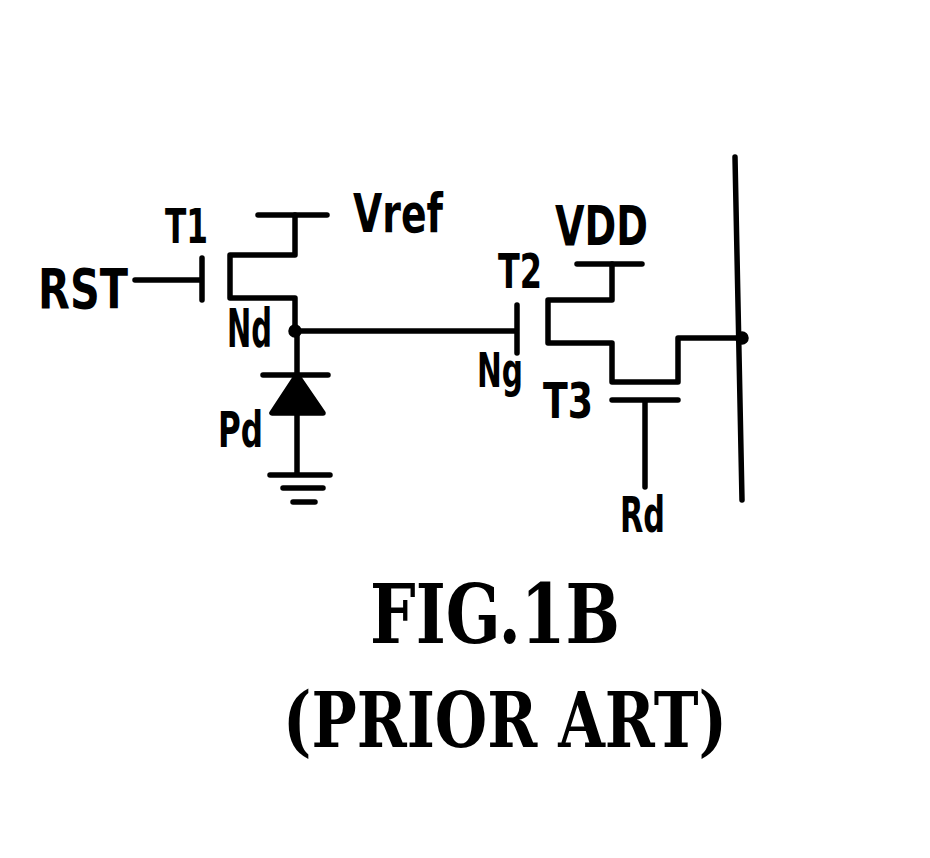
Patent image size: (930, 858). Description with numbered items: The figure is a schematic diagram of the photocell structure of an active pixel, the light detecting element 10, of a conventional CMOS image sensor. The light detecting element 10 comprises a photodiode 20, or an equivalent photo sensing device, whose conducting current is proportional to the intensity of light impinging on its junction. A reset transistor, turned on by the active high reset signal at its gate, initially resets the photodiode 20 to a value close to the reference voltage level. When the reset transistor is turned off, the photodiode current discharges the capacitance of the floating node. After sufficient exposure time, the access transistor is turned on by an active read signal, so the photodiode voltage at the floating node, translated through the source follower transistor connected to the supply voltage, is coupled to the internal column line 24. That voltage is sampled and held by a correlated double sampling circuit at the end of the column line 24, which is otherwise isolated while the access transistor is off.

The light detecting element 10 is at (577, 157).
The photodiode 20 is at (322, 410).
The internal column line 24 is at (737, 193).